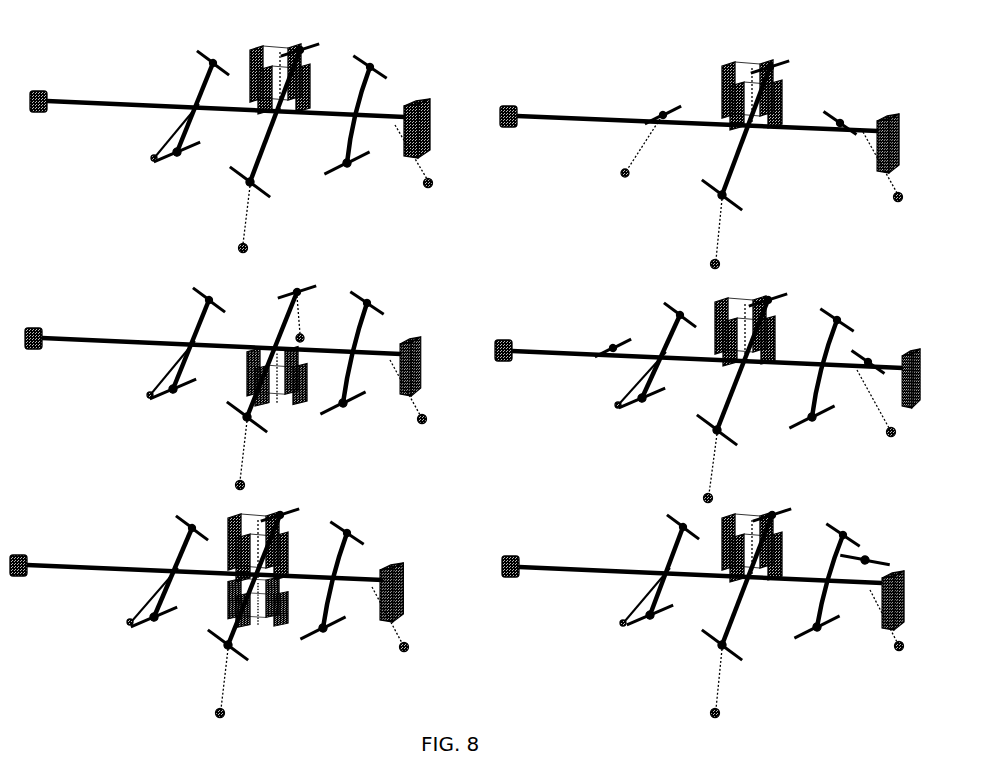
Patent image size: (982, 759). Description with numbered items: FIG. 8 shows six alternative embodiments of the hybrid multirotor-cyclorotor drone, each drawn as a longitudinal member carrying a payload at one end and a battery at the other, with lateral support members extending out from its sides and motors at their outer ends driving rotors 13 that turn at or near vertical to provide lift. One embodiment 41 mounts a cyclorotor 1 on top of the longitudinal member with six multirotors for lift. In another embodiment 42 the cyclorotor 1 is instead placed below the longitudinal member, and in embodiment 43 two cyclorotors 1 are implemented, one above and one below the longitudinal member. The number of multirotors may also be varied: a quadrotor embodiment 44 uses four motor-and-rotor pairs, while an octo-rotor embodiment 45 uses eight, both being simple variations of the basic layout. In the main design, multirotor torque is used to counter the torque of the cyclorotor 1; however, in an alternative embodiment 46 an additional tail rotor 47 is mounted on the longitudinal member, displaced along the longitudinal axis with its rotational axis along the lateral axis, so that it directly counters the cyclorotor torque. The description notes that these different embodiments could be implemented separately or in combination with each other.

The cyclorotor 1 is at (303, 74).
The rotors 13 is at (381, 77).
The embodiment 41 is at (93, 68).
The embodiment 42 is at (86, 298).
The embodiment 43 is at (76, 528).
The quadrotor embodiment 44 is at (577, 72).
The octo-rotor embodiment 45 is at (574, 313).
The alternative embodiment 46 is at (577, 533).
The tail rotor 47 is at (868, 556).